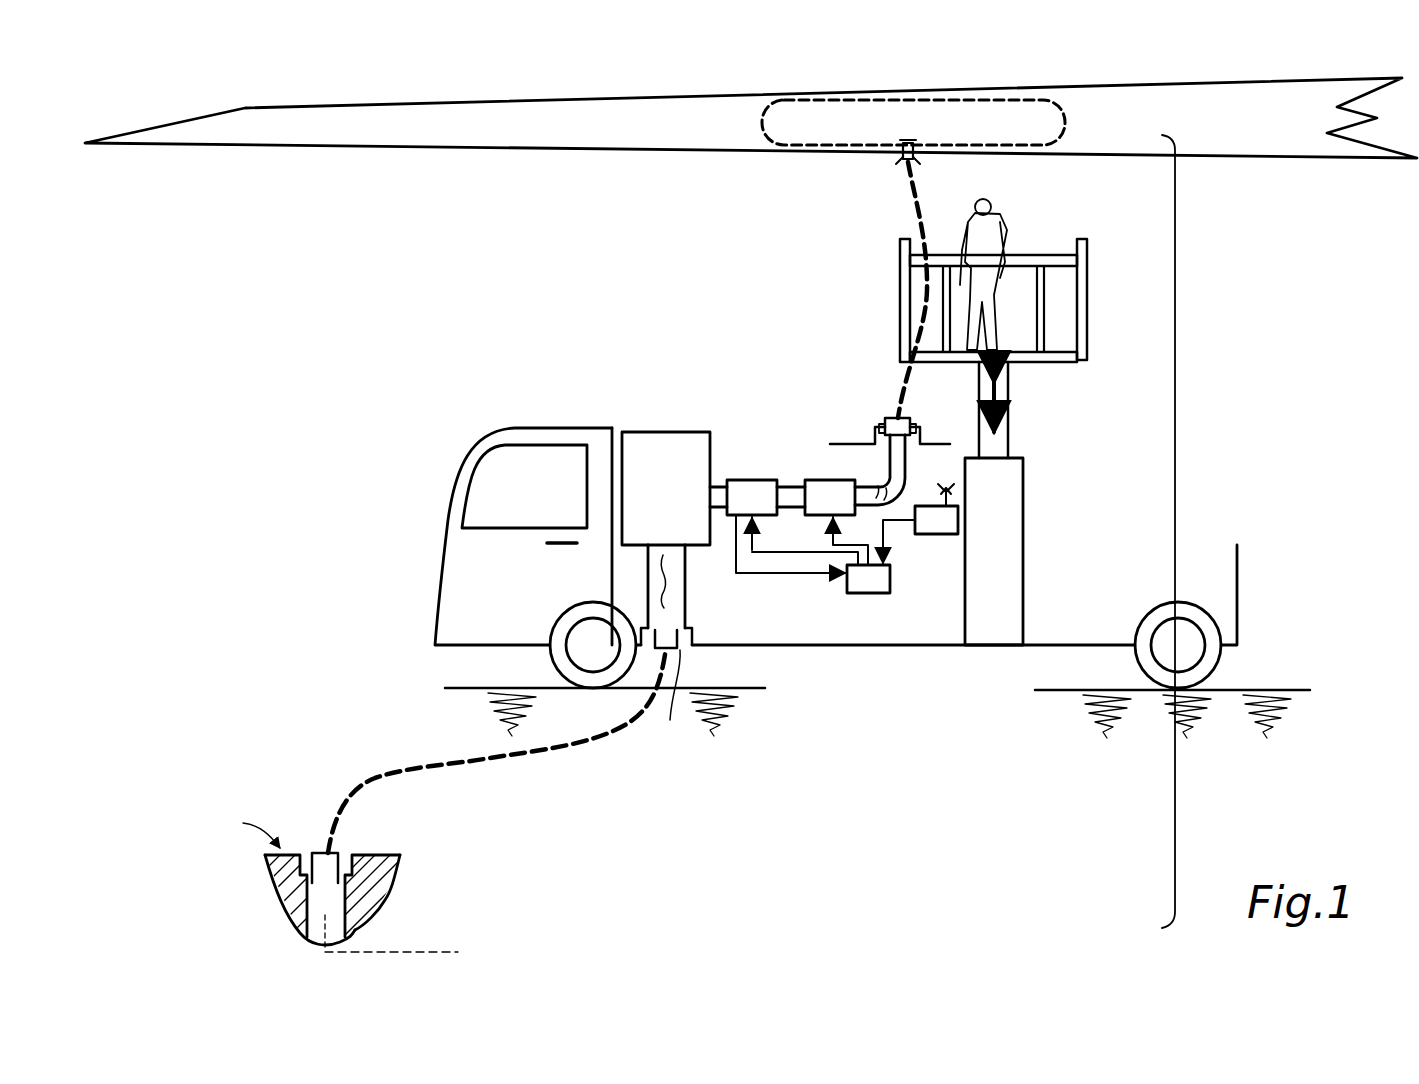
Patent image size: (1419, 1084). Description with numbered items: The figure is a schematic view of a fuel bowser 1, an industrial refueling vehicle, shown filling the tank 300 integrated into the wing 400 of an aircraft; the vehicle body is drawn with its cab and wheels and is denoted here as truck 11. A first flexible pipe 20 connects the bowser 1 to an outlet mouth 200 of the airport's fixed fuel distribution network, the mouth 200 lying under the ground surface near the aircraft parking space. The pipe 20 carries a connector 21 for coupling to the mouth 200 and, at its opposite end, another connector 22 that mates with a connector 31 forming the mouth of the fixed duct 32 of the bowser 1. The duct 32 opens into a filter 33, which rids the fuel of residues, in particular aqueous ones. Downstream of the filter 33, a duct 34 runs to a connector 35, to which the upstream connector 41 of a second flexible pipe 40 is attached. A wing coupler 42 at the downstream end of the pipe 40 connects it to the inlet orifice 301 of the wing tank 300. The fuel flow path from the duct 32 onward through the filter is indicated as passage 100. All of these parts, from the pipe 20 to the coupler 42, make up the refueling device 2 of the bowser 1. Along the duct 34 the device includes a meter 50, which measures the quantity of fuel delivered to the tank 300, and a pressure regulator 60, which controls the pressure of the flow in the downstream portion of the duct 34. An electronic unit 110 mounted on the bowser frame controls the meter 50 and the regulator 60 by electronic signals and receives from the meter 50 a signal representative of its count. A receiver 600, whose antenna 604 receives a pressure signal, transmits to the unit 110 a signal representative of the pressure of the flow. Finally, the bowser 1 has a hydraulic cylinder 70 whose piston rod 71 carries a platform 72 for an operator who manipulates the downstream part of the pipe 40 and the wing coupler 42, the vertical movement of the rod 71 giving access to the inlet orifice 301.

The fuel bowser 1 is at (446, 371).
The refueling device 2 is at (1183, 531).
The vehicle 11 is at (950, 648).
The flexible pipe 20 is at (478, 768).
The connector 21 is at (330, 853).
The connector 22 is at (652, 652).
The connector 31 is at (673, 702).
The fixed duct 32 is at (657, 563).
The filter 33 is at (666, 488).
The duct 34 is at (787, 486).
The connector 35 is at (917, 428).
The second flexible pipe 40 is at (900, 377).
The upstream connector 41 is at (898, 418).
The wing coupler 42 is at (915, 162).
The meter 50 is at (752, 497).
The pressure regulator 60 is at (830, 497).
The hydraulic cylinder 70 is at (1022, 485).
The piston rod 71 is at (1006, 434).
The platform 72 is at (1089, 298).
The fluid passage 100 is at (660, 600).
The electronic unit 110 is at (841, 560).
The outlet mouth 200 is at (304, 847).
The tank 300 is at (913, 122).
The inlet orifice 301 is at (911, 138).
The wing 400 is at (751, 118).
The receiver 600 is at (936, 520).
The antenna 604 is at (941, 492).